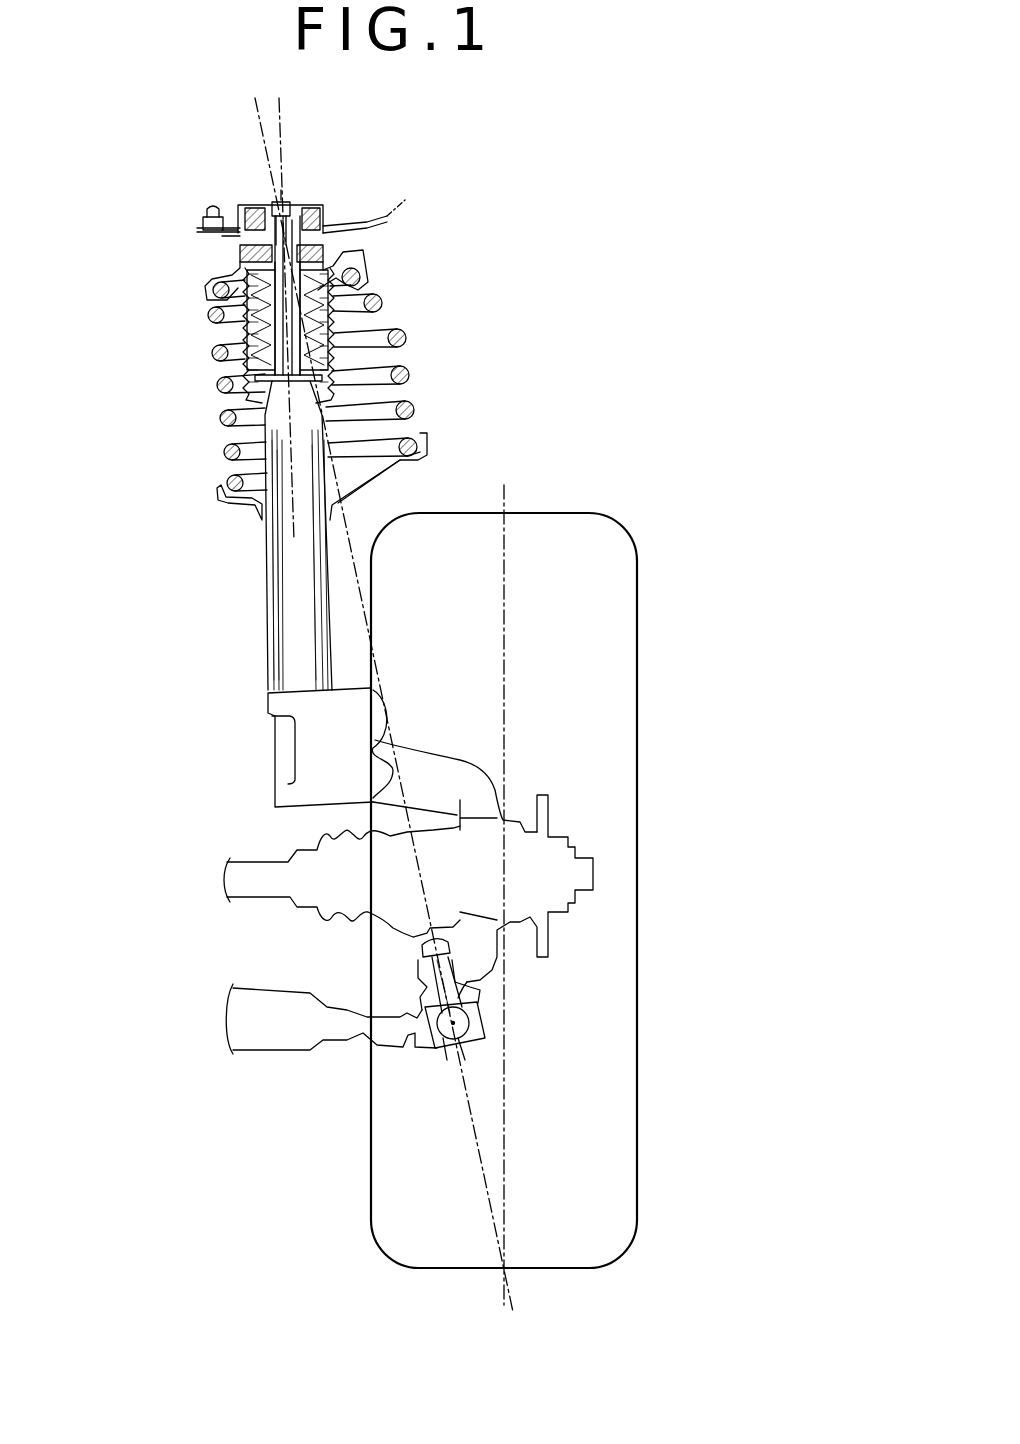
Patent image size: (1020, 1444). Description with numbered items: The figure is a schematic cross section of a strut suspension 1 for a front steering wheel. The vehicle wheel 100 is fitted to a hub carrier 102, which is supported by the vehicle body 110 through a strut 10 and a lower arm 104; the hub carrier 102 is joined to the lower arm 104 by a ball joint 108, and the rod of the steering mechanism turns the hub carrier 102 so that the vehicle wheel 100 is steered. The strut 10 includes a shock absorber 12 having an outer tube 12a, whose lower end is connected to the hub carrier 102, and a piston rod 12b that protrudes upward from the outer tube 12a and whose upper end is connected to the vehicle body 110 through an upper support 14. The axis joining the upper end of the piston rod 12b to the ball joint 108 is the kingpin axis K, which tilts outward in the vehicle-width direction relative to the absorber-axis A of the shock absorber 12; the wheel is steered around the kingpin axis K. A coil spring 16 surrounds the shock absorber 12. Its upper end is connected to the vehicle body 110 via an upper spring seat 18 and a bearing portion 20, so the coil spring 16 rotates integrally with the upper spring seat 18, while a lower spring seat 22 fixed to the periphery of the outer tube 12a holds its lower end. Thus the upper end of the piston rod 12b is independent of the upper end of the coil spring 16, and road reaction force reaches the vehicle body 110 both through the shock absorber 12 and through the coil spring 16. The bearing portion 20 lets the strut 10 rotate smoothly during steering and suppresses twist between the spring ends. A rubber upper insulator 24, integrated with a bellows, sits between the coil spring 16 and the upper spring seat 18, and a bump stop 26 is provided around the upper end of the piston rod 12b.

The strut suspension 1 is at (437, 178).
The strut 10 is at (197, 466).
The shock absorber 12 is at (270, 568).
The outer tube 12a is at (298, 645).
The piston rod 12b is at (245, 333).
The upper support 14 is at (316, 204).
The coil spring 16 is at (403, 376).
The upper spring seat 18 is at (347, 254).
The bearing portion 20 is at (240, 248).
The lower spring seat 22 is at (383, 473).
The upper insulator 24 is at (320, 283).
The bump stop 26 is at (335, 322).
The vehicle wheel 100 is at (637, 643).
The hub carrier 102 is at (440, 770).
The lower arm 104 is at (284, 1037).
The ball joint 108 is at (445, 1042).
The vehicle body 110 is at (197, 232).
The kingpin axis K is at (266, 151).
The absorber-axis A is at (282, 148).